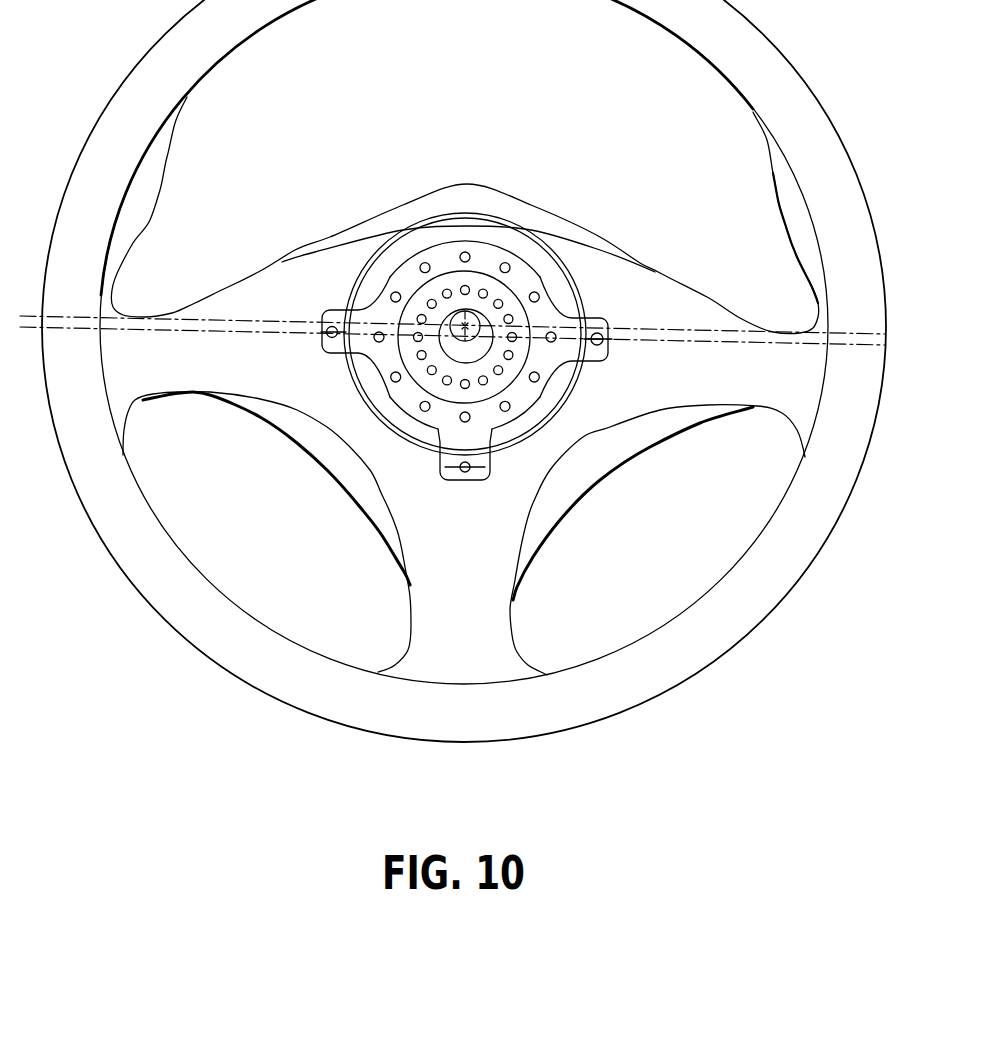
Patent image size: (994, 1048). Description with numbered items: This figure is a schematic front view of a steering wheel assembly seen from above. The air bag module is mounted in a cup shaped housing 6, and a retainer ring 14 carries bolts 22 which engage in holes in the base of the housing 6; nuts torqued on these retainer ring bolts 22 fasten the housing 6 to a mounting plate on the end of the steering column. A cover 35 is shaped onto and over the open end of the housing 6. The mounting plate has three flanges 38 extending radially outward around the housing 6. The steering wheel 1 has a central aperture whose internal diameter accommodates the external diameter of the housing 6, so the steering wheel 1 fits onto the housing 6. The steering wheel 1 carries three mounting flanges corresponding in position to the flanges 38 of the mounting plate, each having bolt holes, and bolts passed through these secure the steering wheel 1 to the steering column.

The steering wheel 1 is at (858, 243).
The cup shaped housing 6 is at (375, 390).
The retainer ring 14 is at (362, 367).
The bolts 22 is at (326, 325).
The cover 35 is at (382, 425).
The flanges 38 is at (320, 342).